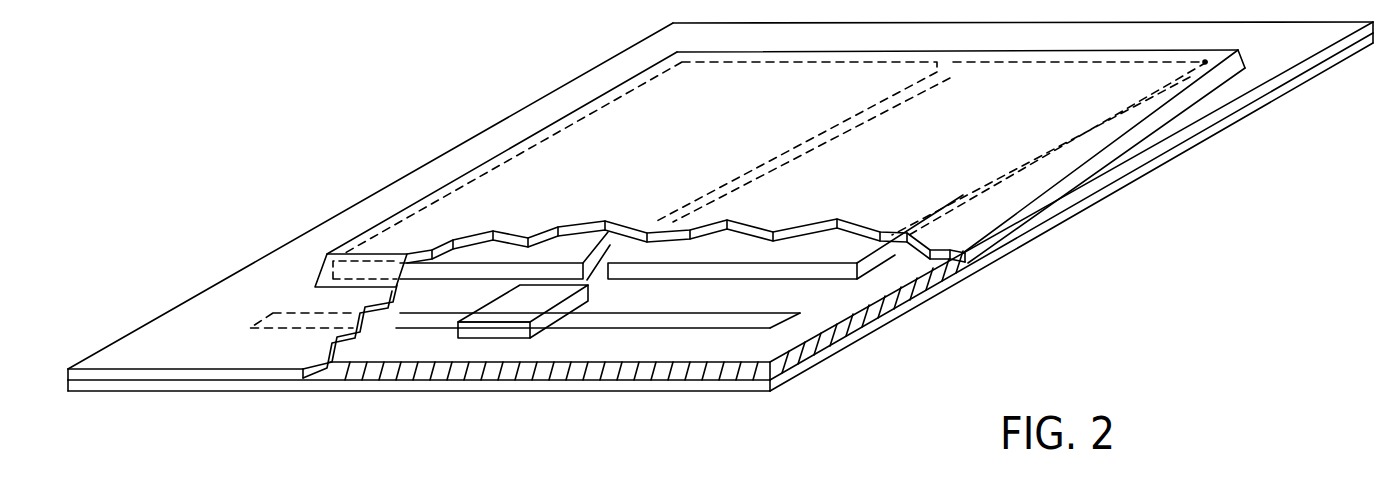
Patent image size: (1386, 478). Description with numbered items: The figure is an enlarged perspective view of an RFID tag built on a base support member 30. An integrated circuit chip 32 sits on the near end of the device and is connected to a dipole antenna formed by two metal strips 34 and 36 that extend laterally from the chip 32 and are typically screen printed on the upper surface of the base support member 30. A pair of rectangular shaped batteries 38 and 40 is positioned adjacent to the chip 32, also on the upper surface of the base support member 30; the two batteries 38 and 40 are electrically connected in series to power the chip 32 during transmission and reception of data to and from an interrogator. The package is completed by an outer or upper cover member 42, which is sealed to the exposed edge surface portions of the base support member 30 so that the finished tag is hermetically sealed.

The base support member 30 is at (162, 388).
The integrated circuit chip 32 is at (505, 330).
The metal strip 34 is at (617, 322).
The metal strip 36 is at (442, 323).
The rectangular shaped battery 38 is at (585, 118).
The rectangular shaped battery 40 is at (870, 135).
The upper cover member 42 is at (160, 375).